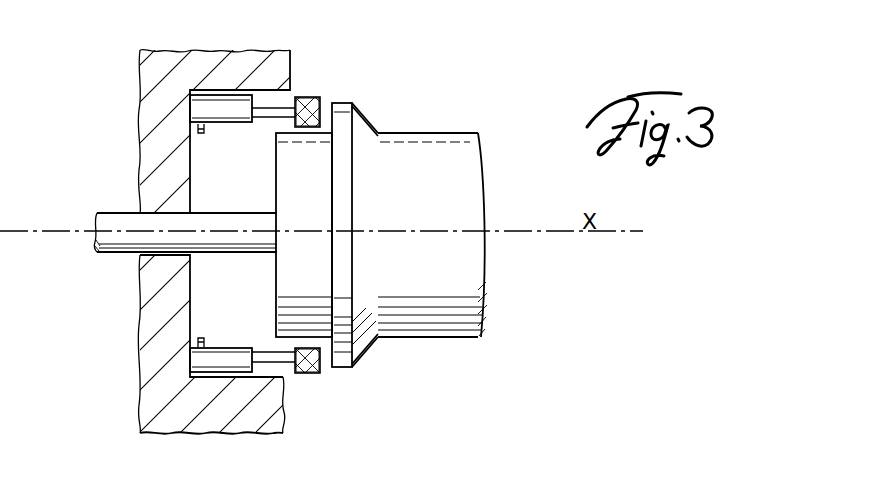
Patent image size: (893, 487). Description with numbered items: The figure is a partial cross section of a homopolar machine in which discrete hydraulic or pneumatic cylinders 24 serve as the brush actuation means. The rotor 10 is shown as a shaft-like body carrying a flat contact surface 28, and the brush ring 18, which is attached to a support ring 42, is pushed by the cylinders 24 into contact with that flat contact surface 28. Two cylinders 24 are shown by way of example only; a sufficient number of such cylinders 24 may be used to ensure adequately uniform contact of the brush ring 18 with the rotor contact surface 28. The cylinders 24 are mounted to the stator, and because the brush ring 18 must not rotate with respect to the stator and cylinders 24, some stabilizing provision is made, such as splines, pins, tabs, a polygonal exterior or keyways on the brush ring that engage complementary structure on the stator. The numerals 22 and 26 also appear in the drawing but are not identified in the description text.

The rotor 10 is at (455, 130).
The brush ring 18 is at (317, 97).
The shaft 22 is at (113, 213).
The hydraulic or pneumatic cylinders 24 is at (200, 113).
The wall 26 is at (152, 69).
The flat contact surface 28 is at (327, 103).
The support ring 42 is at (303, 97).